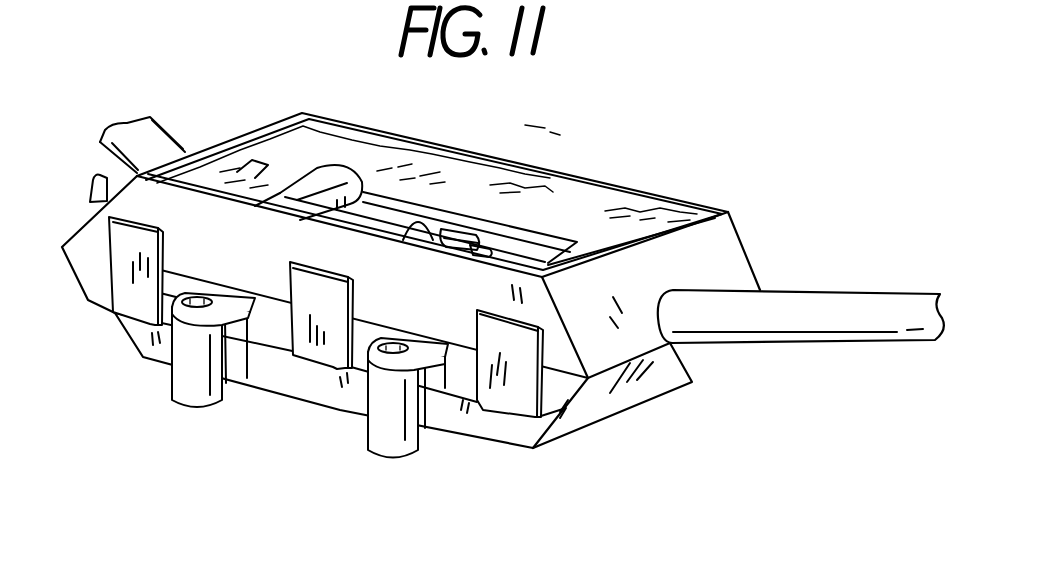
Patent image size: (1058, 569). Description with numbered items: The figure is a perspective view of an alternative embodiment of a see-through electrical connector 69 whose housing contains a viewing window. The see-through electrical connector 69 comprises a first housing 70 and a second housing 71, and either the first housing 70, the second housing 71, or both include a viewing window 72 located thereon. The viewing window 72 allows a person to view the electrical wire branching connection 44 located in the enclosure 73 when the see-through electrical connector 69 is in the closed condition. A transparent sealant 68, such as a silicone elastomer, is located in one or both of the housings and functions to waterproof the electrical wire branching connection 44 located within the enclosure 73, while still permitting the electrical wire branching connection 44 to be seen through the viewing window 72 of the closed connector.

The electrical wire branching connection 44 is at (455, 208).
The transparent sealant 68 is at (540, 180).
The see-through electrical connector 69 is at (682, 118).
The first housing 70 is at (750, 252).
The second housing 71 is at (587, 427).
The viewing window 72 is at (628, 212).
The enclosure 73 is at (596, 229).